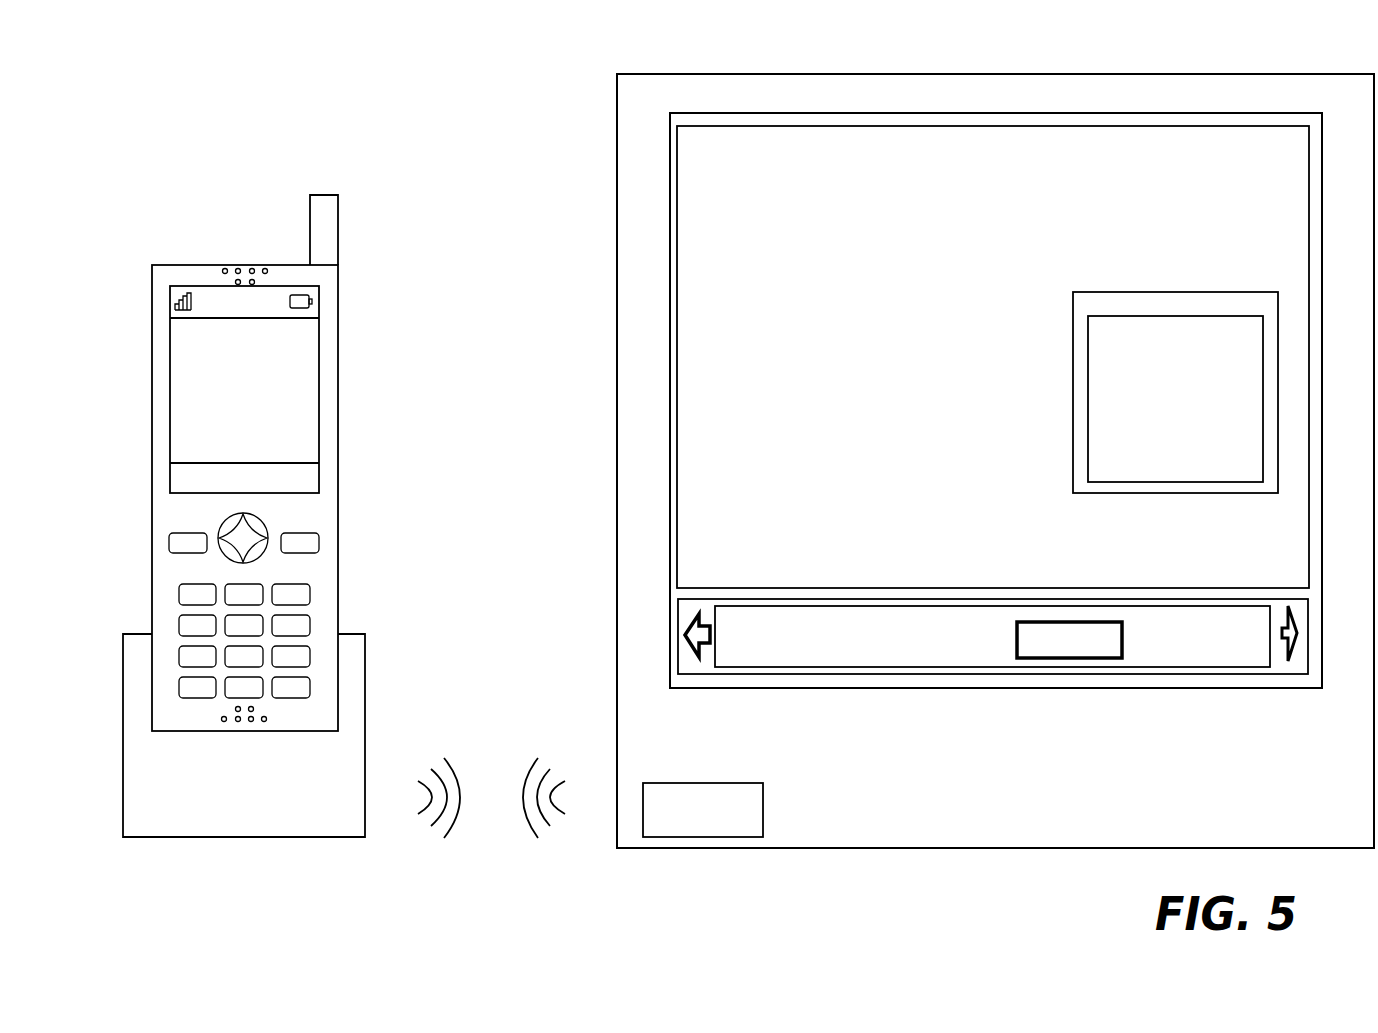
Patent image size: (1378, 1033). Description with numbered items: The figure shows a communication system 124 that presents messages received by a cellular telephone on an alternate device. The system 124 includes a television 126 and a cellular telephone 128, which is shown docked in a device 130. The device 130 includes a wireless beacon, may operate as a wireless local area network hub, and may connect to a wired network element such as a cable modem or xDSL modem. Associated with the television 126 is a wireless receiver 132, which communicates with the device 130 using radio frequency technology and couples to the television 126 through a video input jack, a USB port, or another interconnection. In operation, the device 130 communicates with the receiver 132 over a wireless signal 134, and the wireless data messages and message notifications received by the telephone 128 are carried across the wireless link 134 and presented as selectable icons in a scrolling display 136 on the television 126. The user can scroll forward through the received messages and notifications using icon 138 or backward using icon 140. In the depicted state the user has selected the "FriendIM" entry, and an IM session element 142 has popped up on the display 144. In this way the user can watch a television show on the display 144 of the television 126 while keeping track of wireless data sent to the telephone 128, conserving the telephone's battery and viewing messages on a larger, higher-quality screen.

The communication system 124 is at (432, 127).
The television 126 is at (1112, 806).
The cellular telephone 128 is at (222, 408).
The device 130 is at (222, 795).
The wireless receiver 132 is at (687, 819).
The wireless signal 134 is at (491, 798).
The scrolling display 136 is at (873, 650).
The icon 138 is at (702, 648).
The icon 140 is at (1277, 660).
The IM session element 142 is at (1169, 413).
The display 144 is at (846, 353).